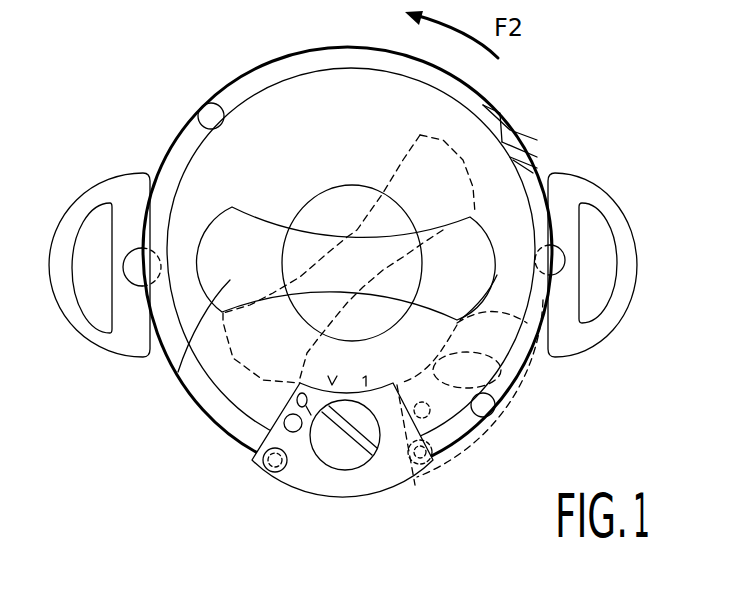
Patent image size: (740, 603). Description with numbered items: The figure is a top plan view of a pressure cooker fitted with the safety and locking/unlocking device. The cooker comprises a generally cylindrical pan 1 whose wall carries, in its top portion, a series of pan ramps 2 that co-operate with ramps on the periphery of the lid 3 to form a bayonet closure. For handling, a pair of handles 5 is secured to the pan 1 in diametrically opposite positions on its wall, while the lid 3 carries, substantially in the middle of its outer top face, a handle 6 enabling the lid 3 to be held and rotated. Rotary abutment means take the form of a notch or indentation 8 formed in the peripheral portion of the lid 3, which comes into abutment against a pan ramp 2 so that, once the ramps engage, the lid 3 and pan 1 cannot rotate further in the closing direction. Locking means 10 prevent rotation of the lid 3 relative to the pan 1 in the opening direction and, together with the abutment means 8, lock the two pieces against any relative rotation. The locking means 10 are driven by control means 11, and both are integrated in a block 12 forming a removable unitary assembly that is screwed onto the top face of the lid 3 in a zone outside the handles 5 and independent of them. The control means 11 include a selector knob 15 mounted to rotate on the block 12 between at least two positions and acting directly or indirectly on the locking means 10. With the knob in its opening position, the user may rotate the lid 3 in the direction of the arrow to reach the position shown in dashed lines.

The pan 1 is at (547, 143).
The pan ramps 2 is at (381, 410).
The lid 3 is at (220, 163).
The handles 5 is at (73, 310).
The handle 6 is at (178, 372).
The notch or indentation 8 is at (507, 114).
The locking means 10 is at (257, 463).
The control means 11 is at (349, 476).
The block 12 is at (313, 477).
The selector knob 15 is at (373, 433).